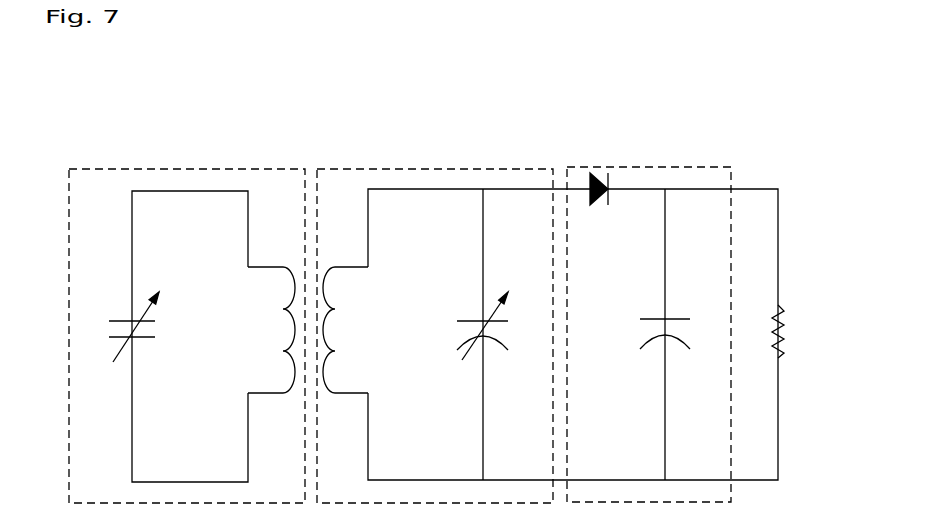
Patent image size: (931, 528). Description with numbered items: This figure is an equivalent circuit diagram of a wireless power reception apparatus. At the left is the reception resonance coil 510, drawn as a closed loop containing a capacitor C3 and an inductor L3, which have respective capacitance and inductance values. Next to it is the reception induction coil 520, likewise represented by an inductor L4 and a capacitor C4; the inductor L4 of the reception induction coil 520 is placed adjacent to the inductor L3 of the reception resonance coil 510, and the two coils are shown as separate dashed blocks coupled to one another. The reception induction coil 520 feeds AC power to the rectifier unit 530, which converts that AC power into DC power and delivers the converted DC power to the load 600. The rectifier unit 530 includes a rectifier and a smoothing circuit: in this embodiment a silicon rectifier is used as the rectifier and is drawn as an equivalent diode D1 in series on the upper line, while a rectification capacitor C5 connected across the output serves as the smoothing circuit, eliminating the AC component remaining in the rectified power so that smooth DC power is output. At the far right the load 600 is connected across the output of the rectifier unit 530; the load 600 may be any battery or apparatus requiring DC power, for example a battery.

The reception resonance coil 510 is at (191, 168).
The reception induction coil 520 is at (456, 168).
The rectifier unit 530 is at (656, 166).
The load 600 is at (786, 296).
The capacitor C3 is at (120, 327).
The inductor L3 is at (271, 330).
The inductor L4 is at (345, 330).
The capacitor C4 is at (498, 334).
The diode D1 is at (600, 173).
The rectification capacitor C5 is at (678, 334).